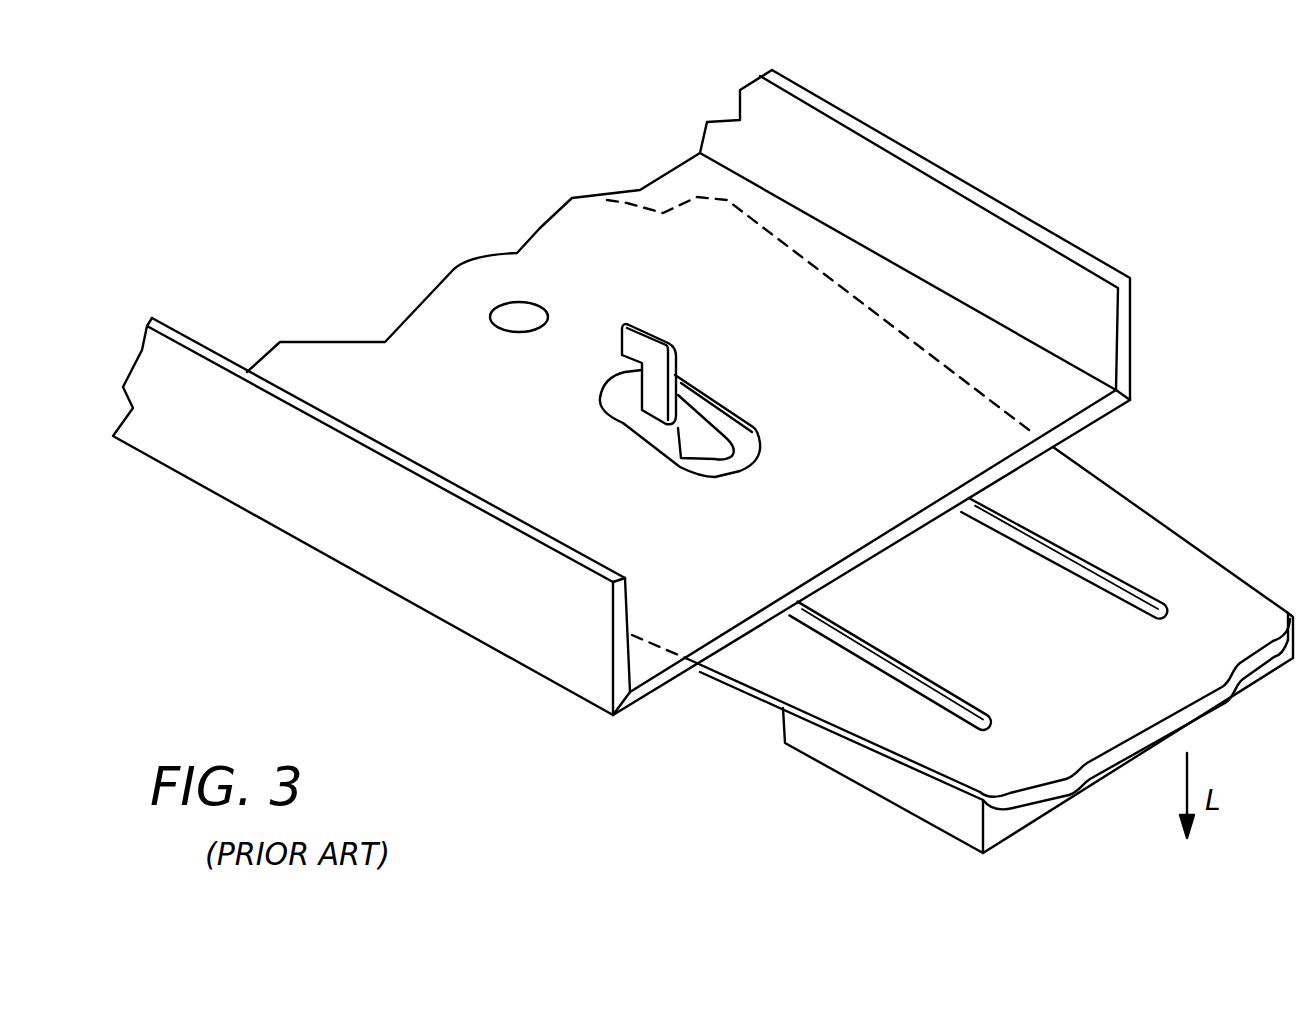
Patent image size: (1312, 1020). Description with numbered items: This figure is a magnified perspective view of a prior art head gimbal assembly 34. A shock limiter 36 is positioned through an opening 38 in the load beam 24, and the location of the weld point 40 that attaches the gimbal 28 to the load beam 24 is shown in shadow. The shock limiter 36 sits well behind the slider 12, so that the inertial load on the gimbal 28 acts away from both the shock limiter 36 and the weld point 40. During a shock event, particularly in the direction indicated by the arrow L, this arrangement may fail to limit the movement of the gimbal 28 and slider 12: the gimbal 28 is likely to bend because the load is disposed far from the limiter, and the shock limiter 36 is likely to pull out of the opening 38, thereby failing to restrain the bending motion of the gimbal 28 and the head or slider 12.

The head gimbal assembly 34 is at (480, 178).
The load beam 24 is at (903, 192).
The weld point 40 is at (496, 312).
The shock limiter 36 is at (643, 353).
The opening 38 is at (635, 420).
The gimbal 28 is at (1115, 498).
The slider 12 is at (890, 787).